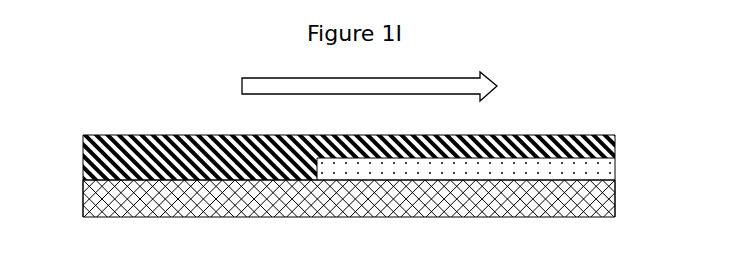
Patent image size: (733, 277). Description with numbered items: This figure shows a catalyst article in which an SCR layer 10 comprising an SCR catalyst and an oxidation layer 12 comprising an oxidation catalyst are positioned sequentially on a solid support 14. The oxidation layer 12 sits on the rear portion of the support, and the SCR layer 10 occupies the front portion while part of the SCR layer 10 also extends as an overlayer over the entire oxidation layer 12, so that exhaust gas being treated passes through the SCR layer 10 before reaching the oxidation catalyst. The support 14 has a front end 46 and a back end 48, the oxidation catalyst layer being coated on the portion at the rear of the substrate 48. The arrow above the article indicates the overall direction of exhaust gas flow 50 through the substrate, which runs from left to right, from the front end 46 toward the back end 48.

The SCR layer 10 is at (135, 135).
The oxidation layer 12 is at (608, 172).
The solid support 14 is at (595, 215).
The front end of the substrate 46 is at (83, 189).
The back end of the substrate 48 is at (614, 199).
The direction of exhaust gas flow 50 is at (412, 85).